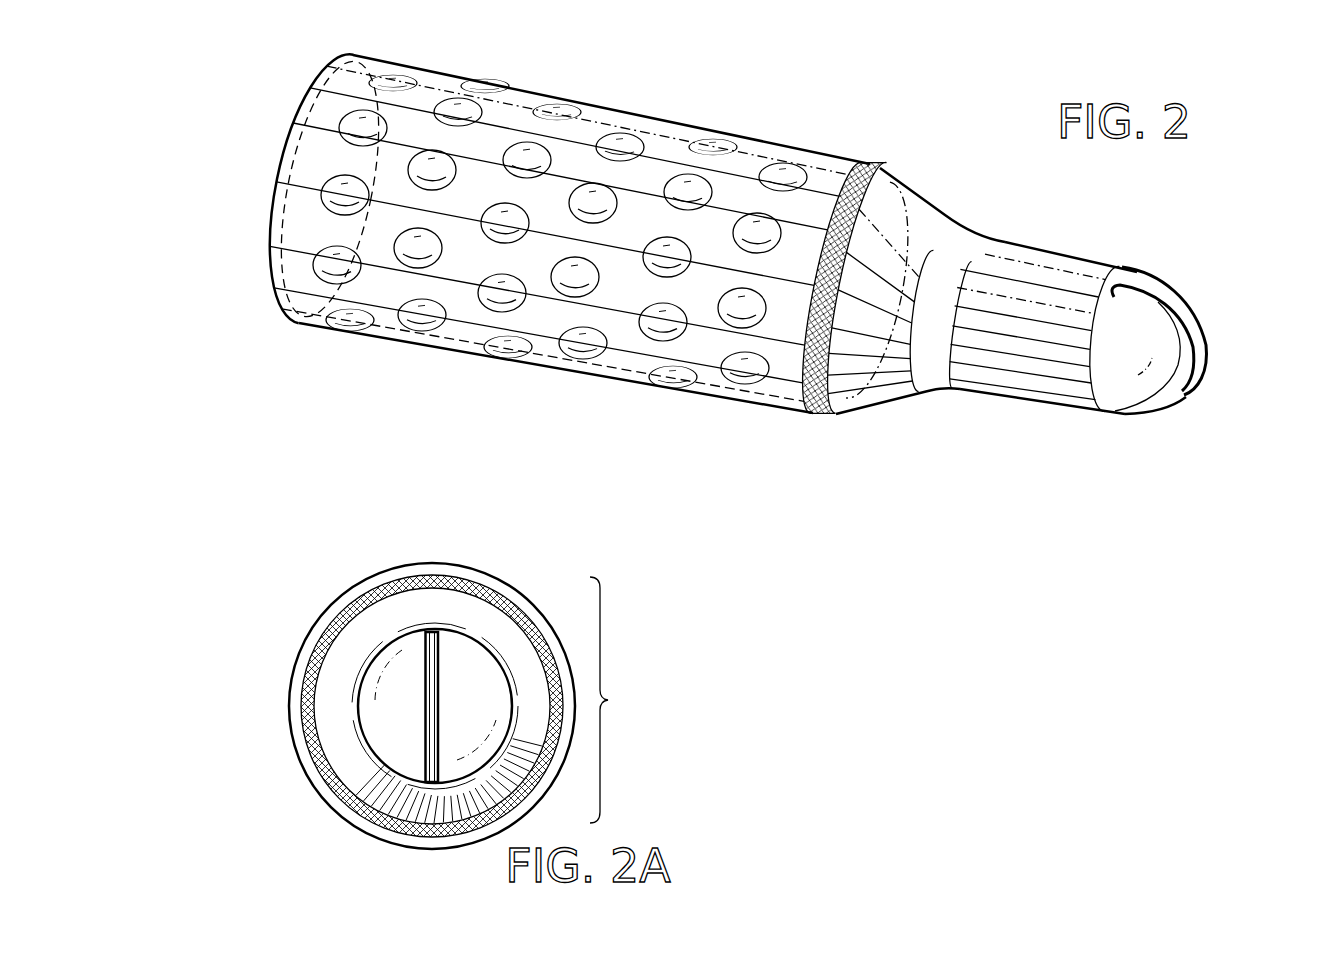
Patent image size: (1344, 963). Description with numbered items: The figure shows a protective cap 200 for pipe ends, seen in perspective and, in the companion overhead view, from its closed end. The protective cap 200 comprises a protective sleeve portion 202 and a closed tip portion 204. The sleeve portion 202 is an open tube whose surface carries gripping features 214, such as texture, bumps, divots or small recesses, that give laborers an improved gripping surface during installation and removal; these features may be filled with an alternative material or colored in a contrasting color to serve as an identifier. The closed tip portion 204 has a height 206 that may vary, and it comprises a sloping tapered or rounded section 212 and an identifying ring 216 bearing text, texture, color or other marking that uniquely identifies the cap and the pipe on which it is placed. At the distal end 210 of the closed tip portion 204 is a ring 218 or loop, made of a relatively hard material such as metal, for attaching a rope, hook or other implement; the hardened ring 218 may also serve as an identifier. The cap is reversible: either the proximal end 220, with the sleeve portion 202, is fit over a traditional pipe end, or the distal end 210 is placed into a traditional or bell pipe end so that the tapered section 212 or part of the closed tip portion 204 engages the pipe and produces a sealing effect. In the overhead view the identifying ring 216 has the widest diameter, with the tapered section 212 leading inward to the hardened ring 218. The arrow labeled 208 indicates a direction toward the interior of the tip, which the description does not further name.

In FIG. 2, the protective cap 200 is at (708, 268).
In FIG. 2, the protective sleeve portion 202 is at (528, 226).
In FIG. 2, the closed tip portion 204 is at (1086, 329).
In FIG. 2A, the closed tip portion 204 is at (626, 700).
In FIG. 2, the height 206 is at (925, 168).
In FIG. 2, the inner surface of tip 208 is at (1184, 412).
In FIG. 2, the distal end 210 is at (1214, 362).
In FIG. 2, the sloping tapered section 212 is at (887, 392).
In FIG. 2A, the sloping tapered section 212 is at (343, 677).
In FIG. 2, the gripping features 214 is at (407, 250).
In FIG. 2, the identifying ring 216 is at (815, 420).
In FIG. 2A, the identifying ring 216 is at (382, 593).
In FIG. 2, the ring 218 is at (1160, 300).
In FIG. 2A, the ring 218 is at (427, 726).
In FIG. 2, the proximal end 220 is at (256, 128).